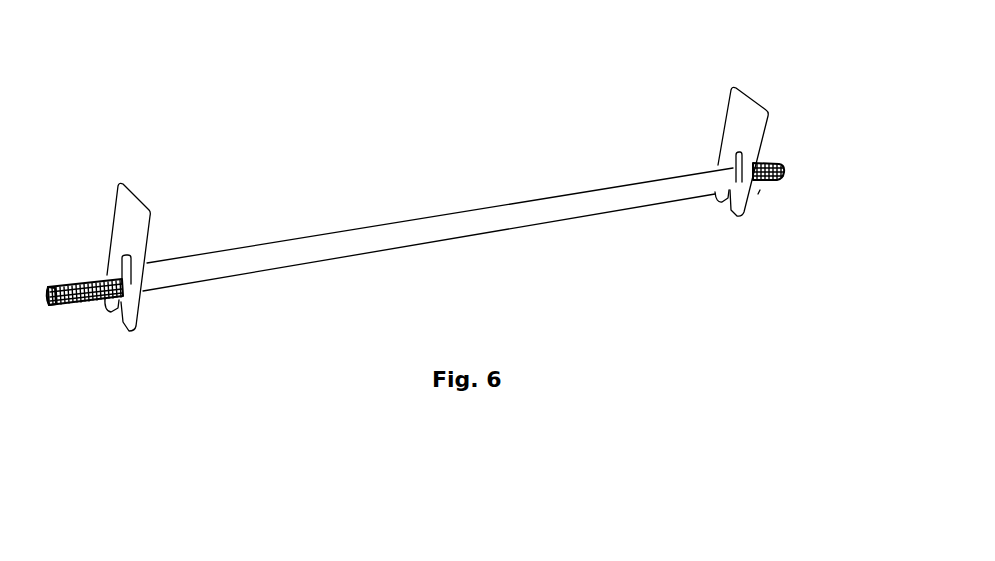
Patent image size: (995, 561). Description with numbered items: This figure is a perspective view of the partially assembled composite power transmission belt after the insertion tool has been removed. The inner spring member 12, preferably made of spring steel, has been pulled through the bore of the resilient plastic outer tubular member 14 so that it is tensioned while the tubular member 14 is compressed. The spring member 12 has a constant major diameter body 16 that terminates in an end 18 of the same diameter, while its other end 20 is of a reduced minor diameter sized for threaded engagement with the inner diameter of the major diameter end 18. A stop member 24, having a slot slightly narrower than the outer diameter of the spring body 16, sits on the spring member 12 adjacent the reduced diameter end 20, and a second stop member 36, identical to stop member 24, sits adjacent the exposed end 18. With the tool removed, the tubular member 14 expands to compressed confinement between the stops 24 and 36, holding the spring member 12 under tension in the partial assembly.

The spring member 12 is at (758, 195).
The tubular member 14 is at (437, 247).
The body 16 is at (92, 302).
The end 18 is at (775, 160).
The end 20 is at (53, 304).
The stop member 24 is at (147, 208).
The second stop member 36 is at (730, 112).